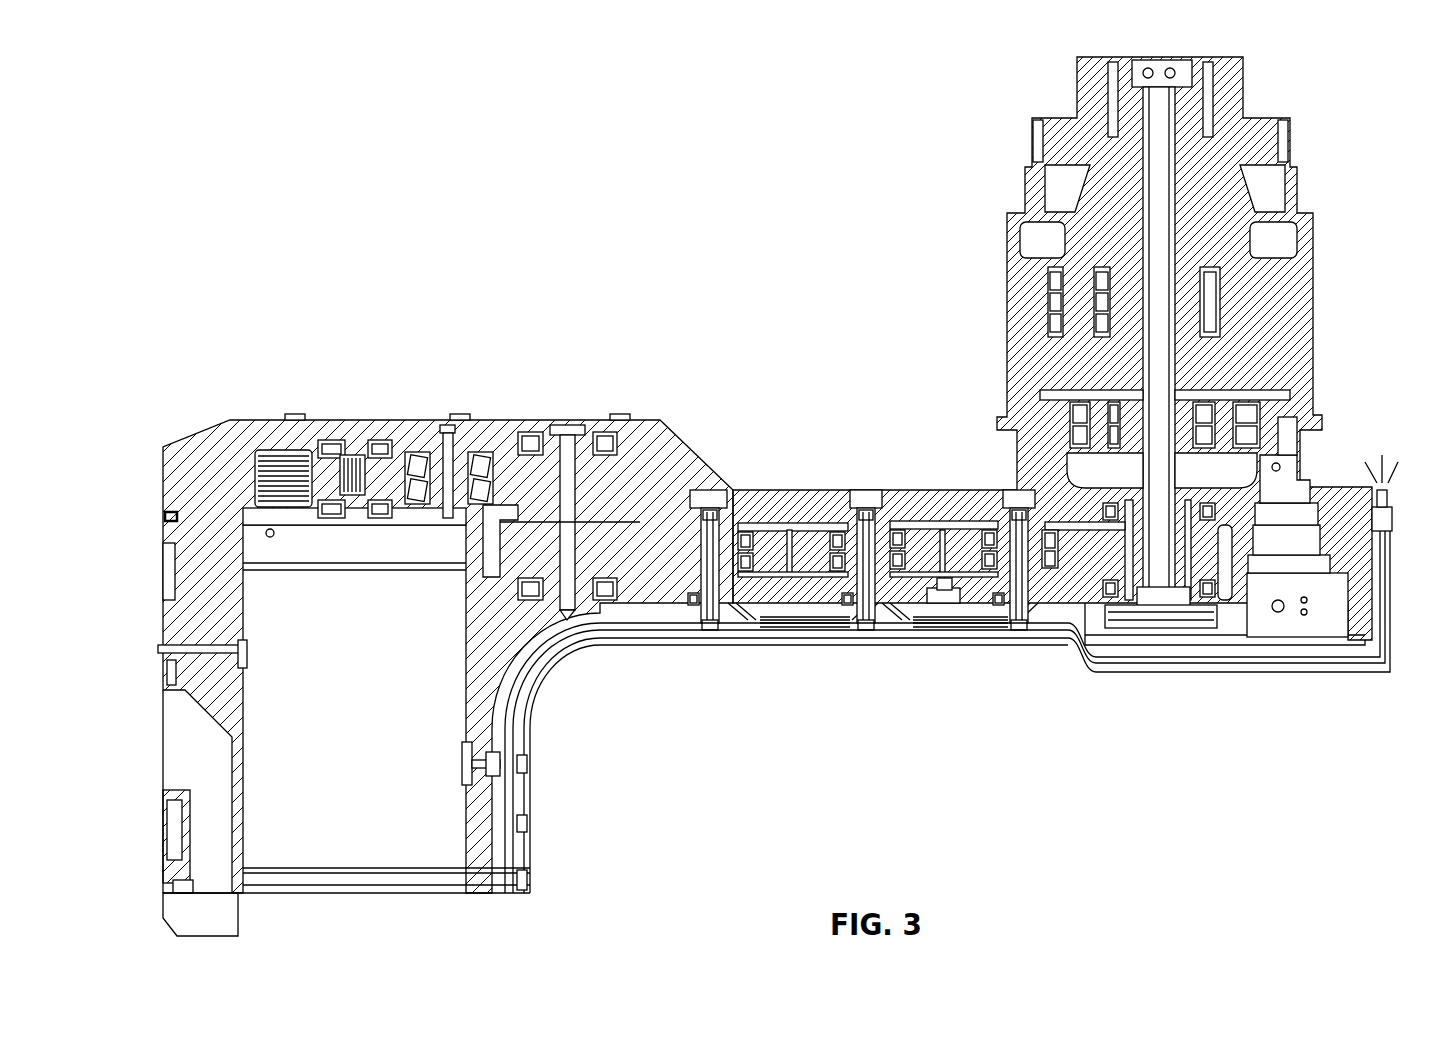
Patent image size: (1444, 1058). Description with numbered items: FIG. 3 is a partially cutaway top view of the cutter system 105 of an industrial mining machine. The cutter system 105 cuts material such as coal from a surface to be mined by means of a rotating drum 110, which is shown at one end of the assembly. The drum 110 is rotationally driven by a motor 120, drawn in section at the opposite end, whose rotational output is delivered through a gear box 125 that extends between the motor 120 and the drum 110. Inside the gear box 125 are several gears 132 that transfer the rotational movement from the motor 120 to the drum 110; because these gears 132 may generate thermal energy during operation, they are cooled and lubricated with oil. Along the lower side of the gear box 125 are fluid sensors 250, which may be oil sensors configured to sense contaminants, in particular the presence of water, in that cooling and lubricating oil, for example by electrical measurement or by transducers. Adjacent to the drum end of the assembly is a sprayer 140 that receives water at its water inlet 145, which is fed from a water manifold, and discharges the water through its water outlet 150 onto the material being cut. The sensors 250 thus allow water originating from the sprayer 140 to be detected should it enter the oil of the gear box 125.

The cutter system 105 is at (660, 306).
The rotating drum 110 is at (953, 152).
The motor 120 is at (265, 630).
The gear box 125 is at (880, 668).
The gears 132 is at (730, 496).
The sprayer 140 is at (1245, 690).
The water inlet 145 is at (1070, 658).
The water outlet 150 is at (1390, 436).
The fluid sensor 250 is at (693, 608).